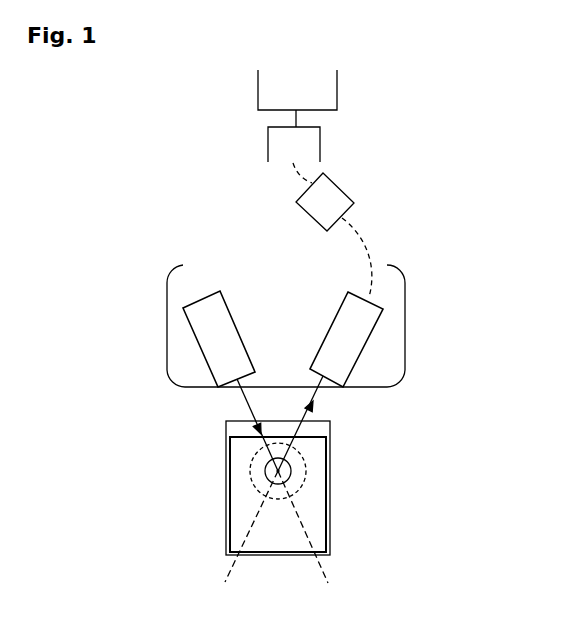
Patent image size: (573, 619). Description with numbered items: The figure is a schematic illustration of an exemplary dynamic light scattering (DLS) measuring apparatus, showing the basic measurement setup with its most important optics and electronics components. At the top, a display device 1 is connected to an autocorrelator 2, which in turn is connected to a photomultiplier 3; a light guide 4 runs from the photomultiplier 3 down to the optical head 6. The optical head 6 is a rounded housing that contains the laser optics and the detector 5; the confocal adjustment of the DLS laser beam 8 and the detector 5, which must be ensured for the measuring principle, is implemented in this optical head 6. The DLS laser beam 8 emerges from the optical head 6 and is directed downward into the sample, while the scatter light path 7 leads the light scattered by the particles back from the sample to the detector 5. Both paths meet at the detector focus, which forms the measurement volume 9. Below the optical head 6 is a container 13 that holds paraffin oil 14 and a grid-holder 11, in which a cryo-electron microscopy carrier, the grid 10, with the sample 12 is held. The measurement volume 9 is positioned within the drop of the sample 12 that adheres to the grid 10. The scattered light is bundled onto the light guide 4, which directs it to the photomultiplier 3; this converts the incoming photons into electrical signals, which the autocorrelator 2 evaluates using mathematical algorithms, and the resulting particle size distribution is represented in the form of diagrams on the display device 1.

The display device 1 is at (327, 86).
The autocorrelator 2 is at (317, 142).
The photomultiplier 3 is at (337, 198).
The light guide 4 is at (370, 251).
The detector 5 is at (362, 327).
The optical head 6 is at (385, 362).
The scatter light path 7 is at (308, 413).
The DLS laser beam 8 is at (251, 410).
The detector focus/measurement volume 9 is at (278, 471).
The cryo-electron microscopy carrier (grid) 10 is at (305, 460).
The grid-holder 11 is at (307, 516).
The sample 12 is at (292, 473).
The container 13 is at (226, 529).
The paraffin oil 14 is at (235, 428).